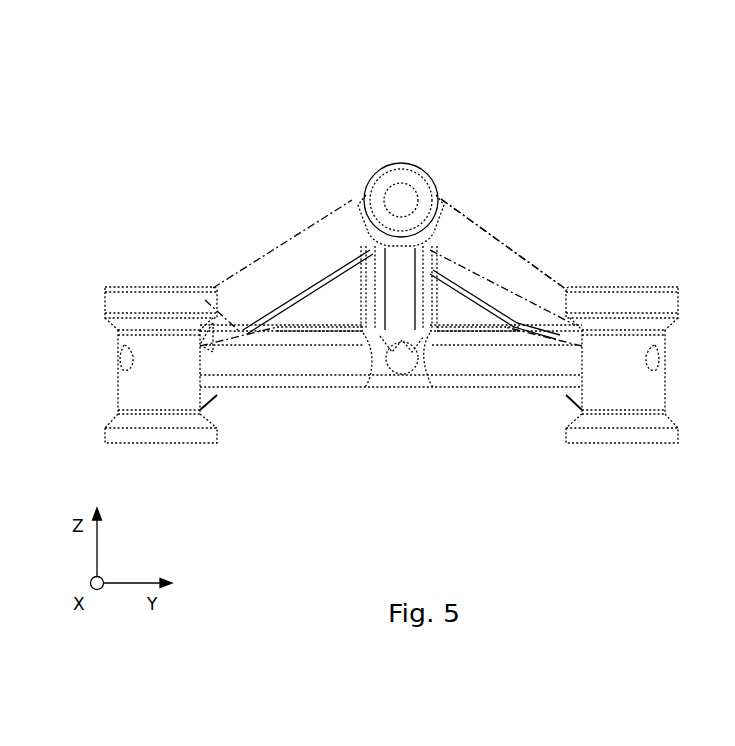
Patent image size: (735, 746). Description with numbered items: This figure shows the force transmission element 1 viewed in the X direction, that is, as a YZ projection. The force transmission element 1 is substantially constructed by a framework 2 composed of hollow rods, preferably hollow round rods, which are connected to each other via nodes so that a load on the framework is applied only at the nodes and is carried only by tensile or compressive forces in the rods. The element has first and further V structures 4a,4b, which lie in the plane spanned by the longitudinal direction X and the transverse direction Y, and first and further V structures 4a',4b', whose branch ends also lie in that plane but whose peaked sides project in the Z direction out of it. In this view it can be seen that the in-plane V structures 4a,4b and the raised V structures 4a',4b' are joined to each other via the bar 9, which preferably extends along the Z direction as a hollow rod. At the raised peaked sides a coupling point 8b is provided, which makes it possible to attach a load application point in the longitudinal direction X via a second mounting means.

The force transmission element 1 is at (571, 75).
The framework 2 is at (508, 247).
The coupling point 8b is at (400, 198).
The bar 9 is at (402, 297).
The first V structure and further V structure 4a,4b is at (472, 358).
The first V structure and further V structure 4a',4b' is at (391, 235).